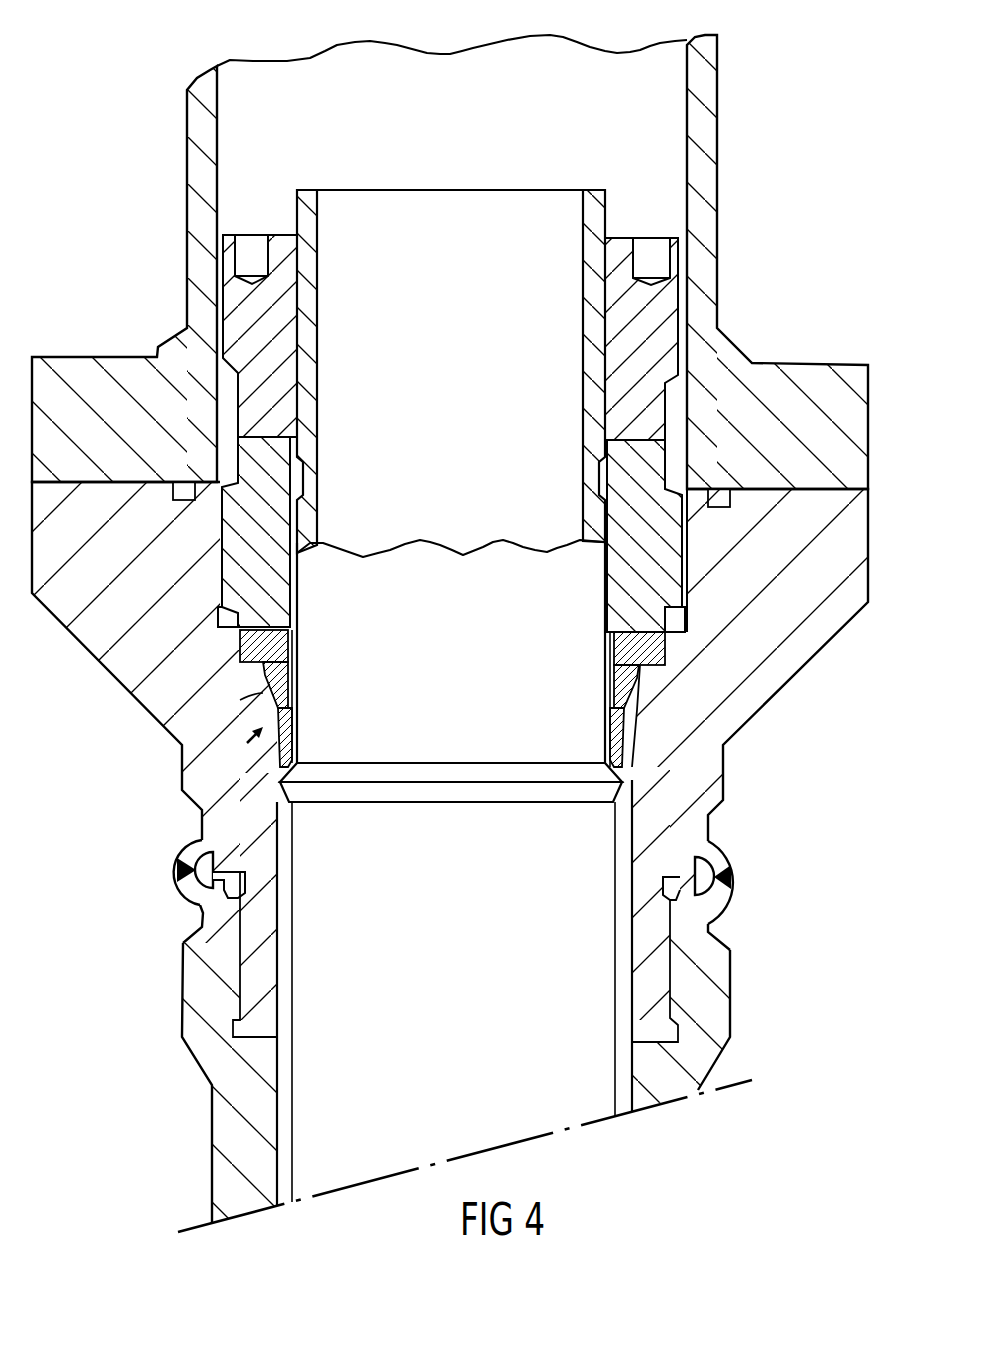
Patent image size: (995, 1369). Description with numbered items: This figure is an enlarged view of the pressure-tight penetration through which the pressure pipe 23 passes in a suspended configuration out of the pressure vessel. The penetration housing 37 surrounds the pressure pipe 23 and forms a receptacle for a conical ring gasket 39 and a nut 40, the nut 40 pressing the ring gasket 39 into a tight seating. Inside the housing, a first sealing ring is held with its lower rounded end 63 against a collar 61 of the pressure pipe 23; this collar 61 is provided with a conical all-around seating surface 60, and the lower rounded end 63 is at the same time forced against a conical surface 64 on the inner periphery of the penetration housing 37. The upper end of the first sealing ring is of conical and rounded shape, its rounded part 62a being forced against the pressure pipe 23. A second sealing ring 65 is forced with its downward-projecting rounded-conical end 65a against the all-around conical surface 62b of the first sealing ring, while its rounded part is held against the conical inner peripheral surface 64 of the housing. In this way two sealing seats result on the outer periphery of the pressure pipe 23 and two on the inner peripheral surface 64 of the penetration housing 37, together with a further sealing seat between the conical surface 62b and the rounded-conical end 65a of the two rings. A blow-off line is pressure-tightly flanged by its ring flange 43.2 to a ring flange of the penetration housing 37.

The ring flange 43.2 is at (732, 367).
The nut 40 is at (630, 570).
The penetration housing 37 is at (790, 665).
The pressure pipe 23 is at (618, 963).
The second sealing ring 65 is at (283, 613).
The all-around conical surface 62b is at (283, 687).
The rounded part 62a is at (292, 716).
The conical surface 64 is at (630, 735).
The conical all-around seating surface 60 is at (422, 770).
The collar 61 is at (418, 793).
The downward-projecting rounded-conical end 65a is at (263, 693).
The conical ring gasket 39 is at (260, 747).
The lower rounded end 63 is at (265, 780).